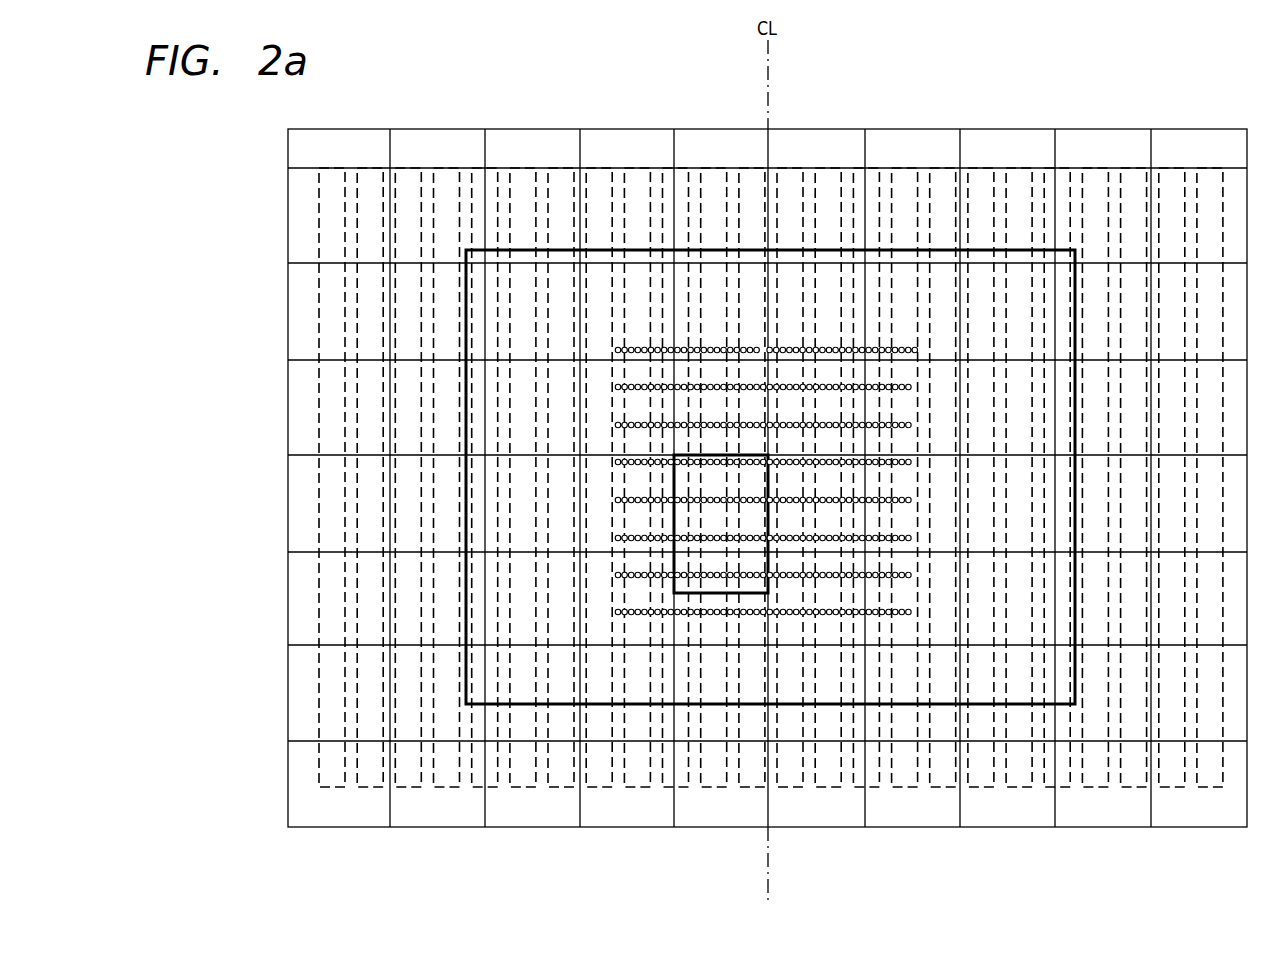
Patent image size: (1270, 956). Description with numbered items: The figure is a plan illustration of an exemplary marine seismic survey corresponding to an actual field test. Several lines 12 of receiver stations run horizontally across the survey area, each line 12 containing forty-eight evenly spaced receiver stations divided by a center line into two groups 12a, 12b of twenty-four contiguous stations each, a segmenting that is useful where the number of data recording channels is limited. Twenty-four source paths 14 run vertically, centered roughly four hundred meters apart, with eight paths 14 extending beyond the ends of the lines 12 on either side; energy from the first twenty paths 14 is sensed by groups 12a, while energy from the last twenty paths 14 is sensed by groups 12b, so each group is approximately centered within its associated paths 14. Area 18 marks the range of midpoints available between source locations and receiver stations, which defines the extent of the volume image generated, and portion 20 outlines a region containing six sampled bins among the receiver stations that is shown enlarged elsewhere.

The line of receiver stations 12 is at (918, 350).
The first group of receiver stations 12a is at (655, 349).
The second group of receiver stations 12b is at (845, 348).
The path 14 is at (1195, 838).
The area 18 is at (690, 250).
The portion 20 is at (770, 486).